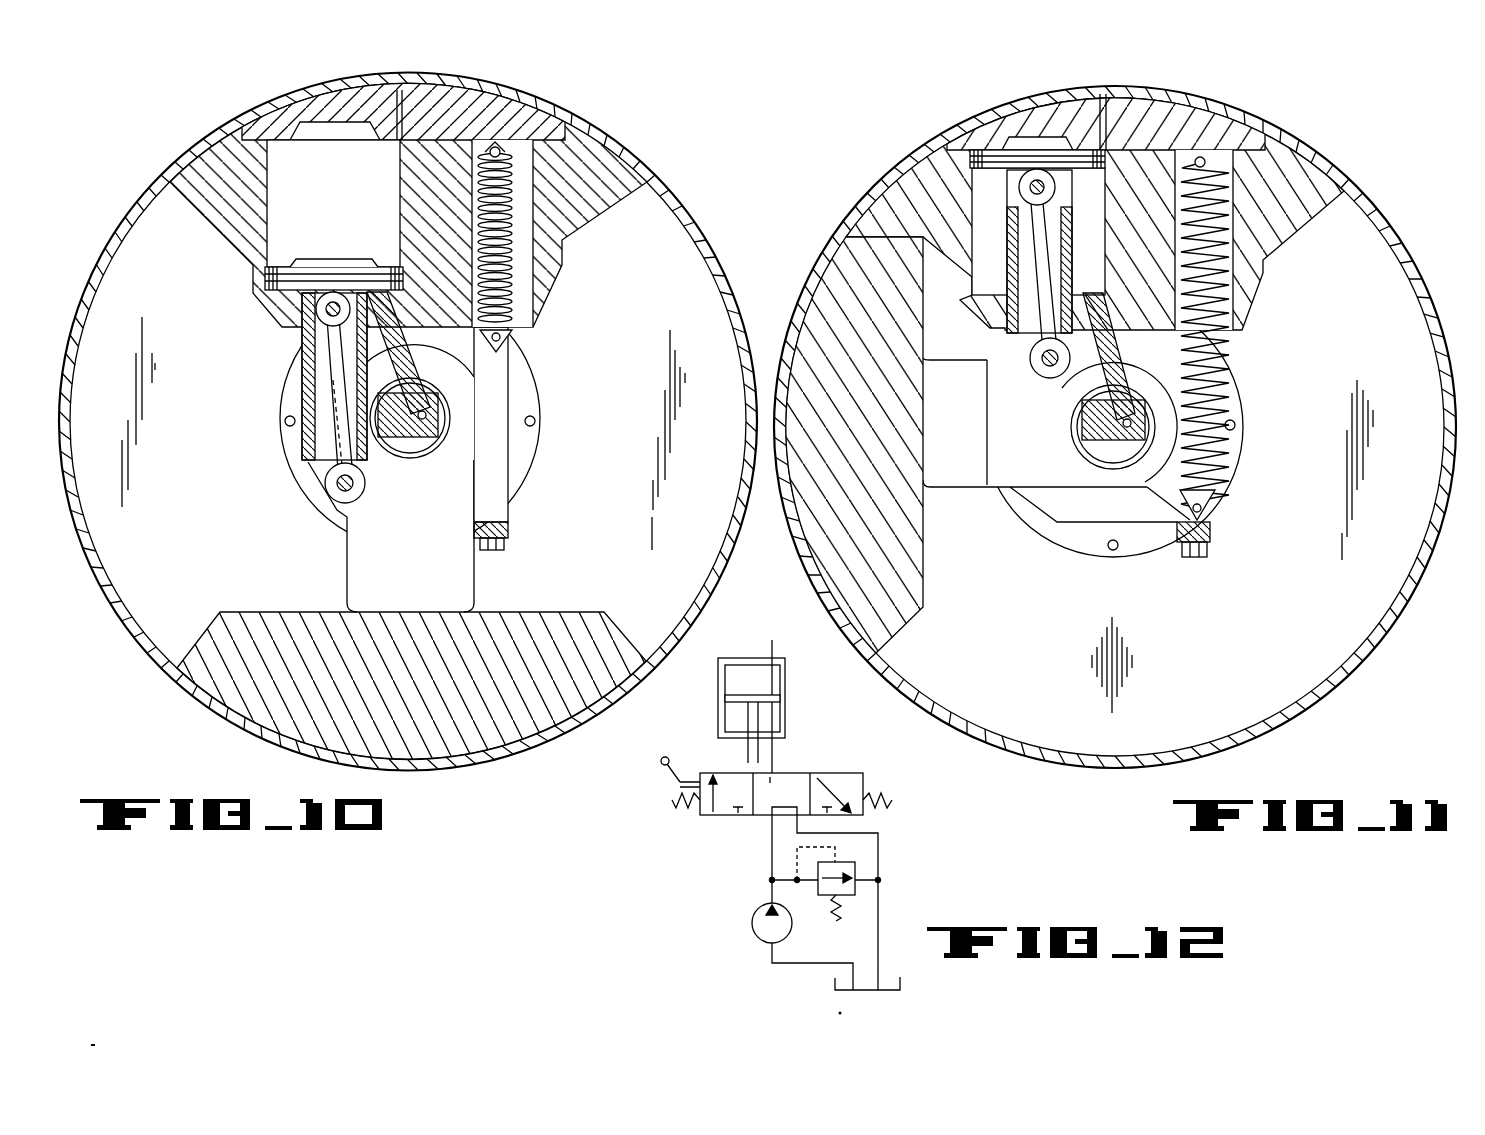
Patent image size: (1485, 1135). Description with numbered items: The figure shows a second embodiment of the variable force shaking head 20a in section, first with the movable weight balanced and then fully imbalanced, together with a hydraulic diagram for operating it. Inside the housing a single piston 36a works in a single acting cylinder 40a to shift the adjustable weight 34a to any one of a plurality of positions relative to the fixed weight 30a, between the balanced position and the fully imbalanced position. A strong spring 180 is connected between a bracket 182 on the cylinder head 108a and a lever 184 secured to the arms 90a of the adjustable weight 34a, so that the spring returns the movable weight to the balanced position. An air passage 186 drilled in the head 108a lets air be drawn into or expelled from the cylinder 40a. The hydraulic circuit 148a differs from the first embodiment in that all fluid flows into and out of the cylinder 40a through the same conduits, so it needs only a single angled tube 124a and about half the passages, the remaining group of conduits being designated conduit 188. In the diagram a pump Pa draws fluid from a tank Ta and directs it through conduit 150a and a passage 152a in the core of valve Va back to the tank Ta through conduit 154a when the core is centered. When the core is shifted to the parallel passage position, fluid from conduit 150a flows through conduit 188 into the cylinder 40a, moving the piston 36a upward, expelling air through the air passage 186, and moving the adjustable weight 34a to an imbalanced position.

In FIG. 10, the variable force shaking head 20a is at (598, 110).
In FIG. 11, the variable force shaking head 20a is at (1315, 113).
In FIG. 10, the fixed weight 30a is at (617, 173).
In FIG. 11, the fixed weight 30a is at (1305, 188).
In FIG. 10, the adjustable weight 34a is at (528, 613).
In FIG. 11, the adjustable weight 34a is at (929, 582).
In FIG. 10, the piston 36a is at (262, 278).
In FIG. 11, the piston 36a is at (965, 155).
In FIG. 12, the piston 36a is at (776, 698).
In FIG. 10, the single acting cylinder 40a is at (273, 228).
In FIG. 11, the single acting cylinder 40a is at (980, 272).
In FIG. 12, the single acting cylinder 40a is at (737, 717).
In FIG. 10, the arms 90a is at (440, 582).
In FIG. 11, the arms 90a is at (1057, 442).
In FIG. 10, the cylinder head 108a is at (286, 124).
In FIG. 11, the cylinder head 108a is at (1027, 118).
In FIG. 10, the angled tube 124a is at (453, 352).
In FIG. 11, the angled tube 124a is at (1075, 378).
In FIG. 10, the spring 180 is at (505, 296).
In FIG. 11, the spring 180 is at (1212, 348).
In FIG. 10, the bracket 182 is at (500, 148).
In FIG. 11, the bracket 182 is at (1203, 155).
In FIG. 10, the lever 184 is at (505, 338).
In FIG. 11, the lever 184 is at (1175, 492).
In FIG. 10, the air passage 186 is at (404, 135).
In FIG. 11, the air passage 186 is at (1108, 105).
In FIG. 12, the air passage 186 is at (772, 644).
In FIG. 12, the conduit 188 is at (777, 747).
In FIG. 12, the valve Va is at (845, 773).
In FIG. 12, the passage 152a is at (768, 808).
In FIG. 12, the conduit 150a is at (770, 862).
In FIG. 12, the circuit 148a is at (663, 850).
In FIG. 12, the conduit 154a is at (880, 903).
In FIG. 12, the pump Pa is at (752, 920).
In FIG. 12, the tank Ta is at (835, 982).